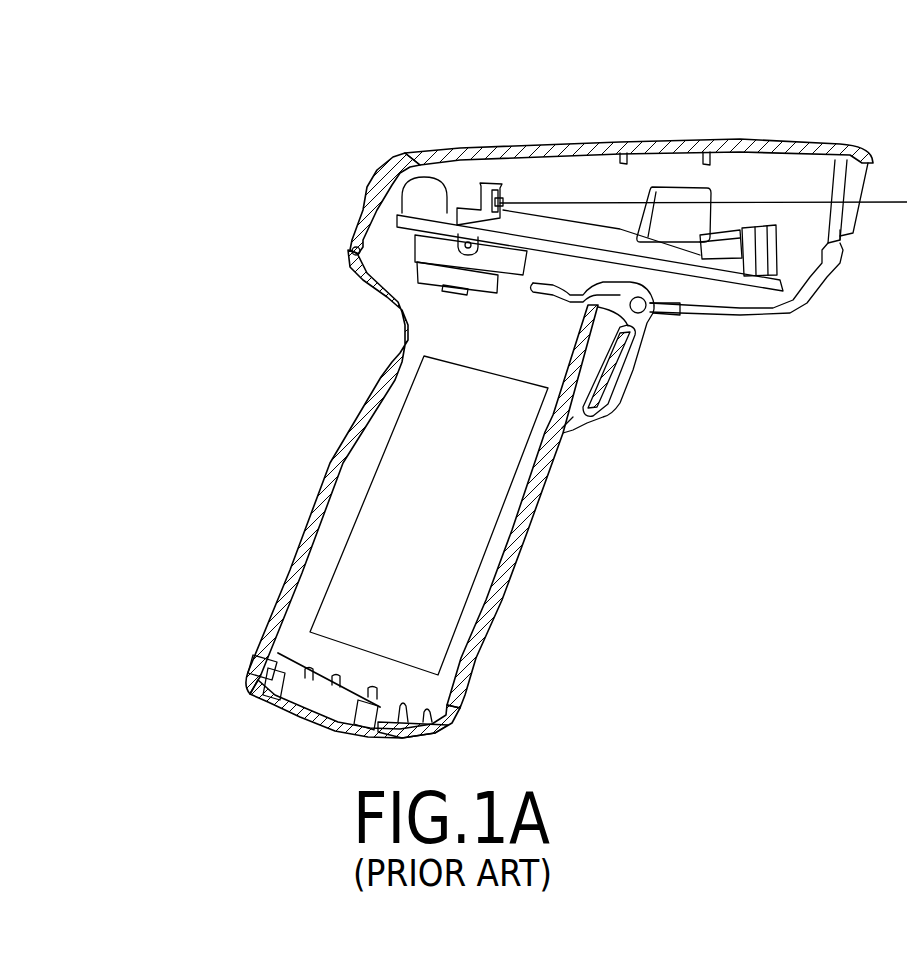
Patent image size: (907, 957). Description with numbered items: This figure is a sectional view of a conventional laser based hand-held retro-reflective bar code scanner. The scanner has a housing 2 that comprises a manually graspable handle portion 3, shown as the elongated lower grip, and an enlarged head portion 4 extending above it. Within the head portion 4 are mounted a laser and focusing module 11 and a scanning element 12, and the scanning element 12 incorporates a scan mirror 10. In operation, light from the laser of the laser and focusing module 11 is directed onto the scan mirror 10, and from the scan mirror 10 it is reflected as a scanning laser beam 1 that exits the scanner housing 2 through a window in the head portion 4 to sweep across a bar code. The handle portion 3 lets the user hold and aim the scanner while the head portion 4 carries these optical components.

The scanning laser beam 1 is at (890, 204).
The housing 2 is at (318, 462).
The handle portion 3 is at (503, 600).
The head portion 4 is at (386, 186).
The scan mirror 10 is at (503, 189).
The laser and focusing module 11 is at (721, 253).
The scanning element 12 is at (483, 194).